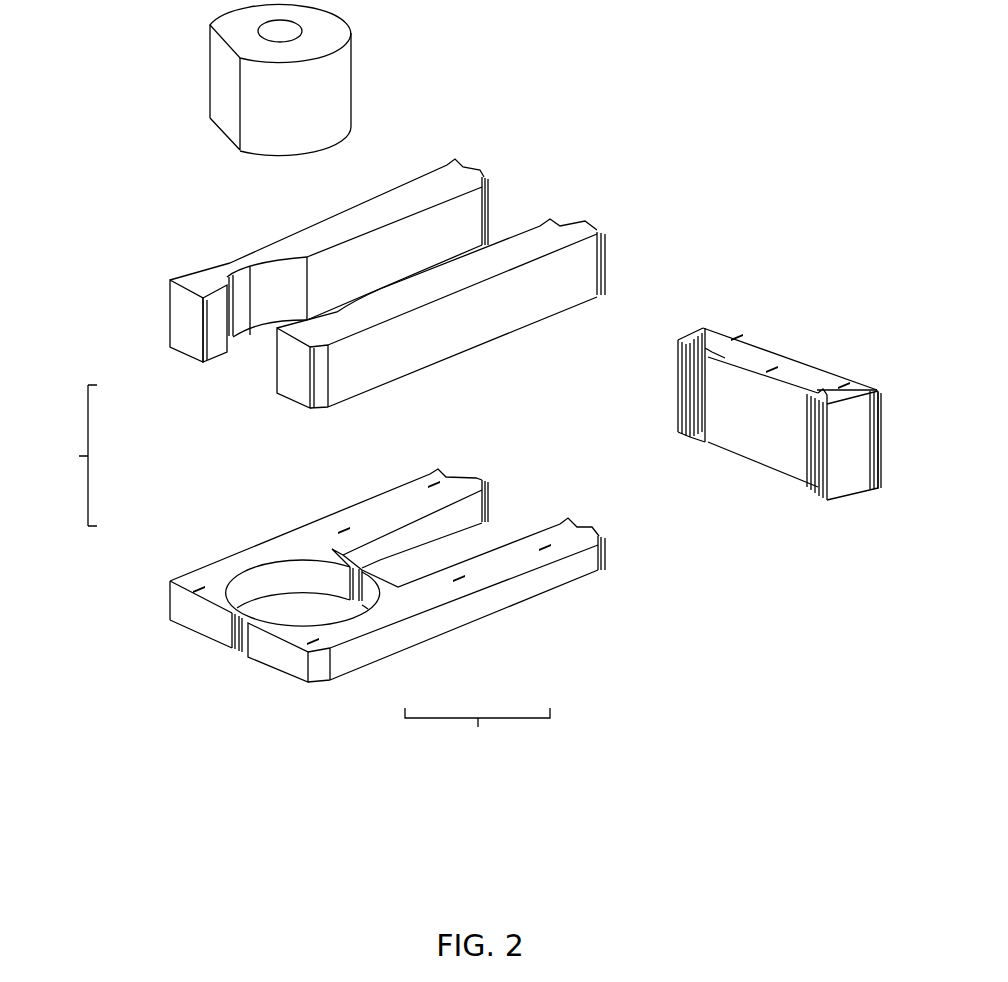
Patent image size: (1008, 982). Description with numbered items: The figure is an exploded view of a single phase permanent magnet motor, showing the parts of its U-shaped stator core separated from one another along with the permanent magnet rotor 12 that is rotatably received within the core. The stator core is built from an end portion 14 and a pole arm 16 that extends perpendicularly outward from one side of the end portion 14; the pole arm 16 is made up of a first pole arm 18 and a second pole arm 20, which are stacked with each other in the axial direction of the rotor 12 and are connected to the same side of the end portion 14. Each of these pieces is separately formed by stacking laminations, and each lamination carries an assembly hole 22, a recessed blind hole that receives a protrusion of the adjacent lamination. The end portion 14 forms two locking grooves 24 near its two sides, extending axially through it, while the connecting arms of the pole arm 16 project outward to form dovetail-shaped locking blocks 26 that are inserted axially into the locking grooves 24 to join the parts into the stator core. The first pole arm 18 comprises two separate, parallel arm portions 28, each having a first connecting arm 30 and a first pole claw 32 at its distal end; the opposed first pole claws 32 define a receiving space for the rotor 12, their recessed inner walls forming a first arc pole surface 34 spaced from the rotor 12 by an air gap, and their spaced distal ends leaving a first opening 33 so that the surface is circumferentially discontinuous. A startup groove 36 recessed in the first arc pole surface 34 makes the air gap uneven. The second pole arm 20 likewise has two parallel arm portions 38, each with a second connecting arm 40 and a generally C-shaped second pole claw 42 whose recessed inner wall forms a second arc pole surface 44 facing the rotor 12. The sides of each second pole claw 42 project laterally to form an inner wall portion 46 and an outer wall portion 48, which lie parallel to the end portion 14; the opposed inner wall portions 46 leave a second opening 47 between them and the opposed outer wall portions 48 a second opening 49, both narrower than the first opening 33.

The permanent magnet rotor 12 is at (227, 85).
The end portion 14 is at (779, 424).
The pole arm 16 is at (322, 413).
The first pole arm 18 is at (326, 244).
The second pole arm 20 is at (354, 589).
The assembly hole 22 is at (553, 550).
The locking groove 24 is at (700, 435).
The locking block 26 is at (587, 218).
The arm portion 28 is at (428, 297).
The first connecting arm 30 is at (384, 205).
The first pole claw 32 is at (235, 257).
The first opening 33 is at (236, 343).
The first arc pole surface 34 is at (278, 277).
The startup groove 36 is at (226, 284).
The arm portion 38 is at (387, 612).
The second connecting arm 40 is at (482, 578).
The second pole claw 42 is at (372, 624).
The second arc pole surface 44 is at (282, 580).
The inner wall portion 46 is at (350, 565).
The second opening 47 is at (361, 567).
The outer wall portion 48 is at (232, 647).
The second opening 49 is at (245, 651).